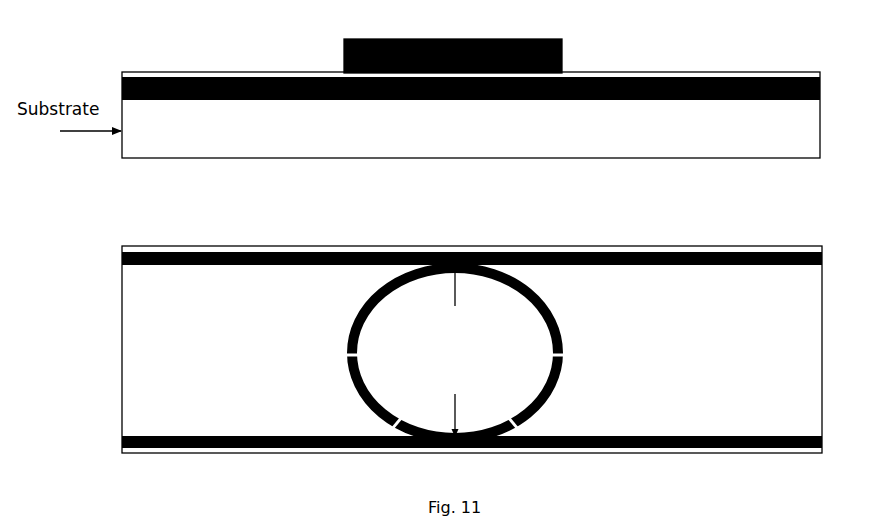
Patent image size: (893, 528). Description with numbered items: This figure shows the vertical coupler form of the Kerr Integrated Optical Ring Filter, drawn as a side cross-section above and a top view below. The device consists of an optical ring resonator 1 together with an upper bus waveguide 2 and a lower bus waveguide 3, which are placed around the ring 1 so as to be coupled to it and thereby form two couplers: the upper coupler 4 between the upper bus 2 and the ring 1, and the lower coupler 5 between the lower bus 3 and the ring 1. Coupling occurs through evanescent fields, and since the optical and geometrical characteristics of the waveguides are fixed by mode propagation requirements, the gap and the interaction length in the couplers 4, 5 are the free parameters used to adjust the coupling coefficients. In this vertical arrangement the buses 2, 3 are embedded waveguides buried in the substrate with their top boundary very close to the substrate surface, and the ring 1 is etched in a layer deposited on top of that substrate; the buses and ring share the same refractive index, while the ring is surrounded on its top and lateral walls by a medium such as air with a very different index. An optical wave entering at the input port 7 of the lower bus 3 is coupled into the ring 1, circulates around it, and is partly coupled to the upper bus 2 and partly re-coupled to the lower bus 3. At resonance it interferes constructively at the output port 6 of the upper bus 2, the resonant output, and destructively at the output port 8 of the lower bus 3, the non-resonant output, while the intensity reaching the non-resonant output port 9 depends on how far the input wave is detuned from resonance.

The optical ring resonator 1 is at (573, 330).
The upper bus waveguide 2 is at (582, 257).
The lower bus waveguide 3 is at (580, 446).
The upper coupler 4 is at (454, 300).
The lower coupler 5 is at (454, 403).
The output port of the upper bus 6 is at (115, 262).
The input port of the lower bus 7 is at (115, 443).
The output port of the lower bus 8 is at (830, 439).
The non-resonant output port 9 is at (830, 258).